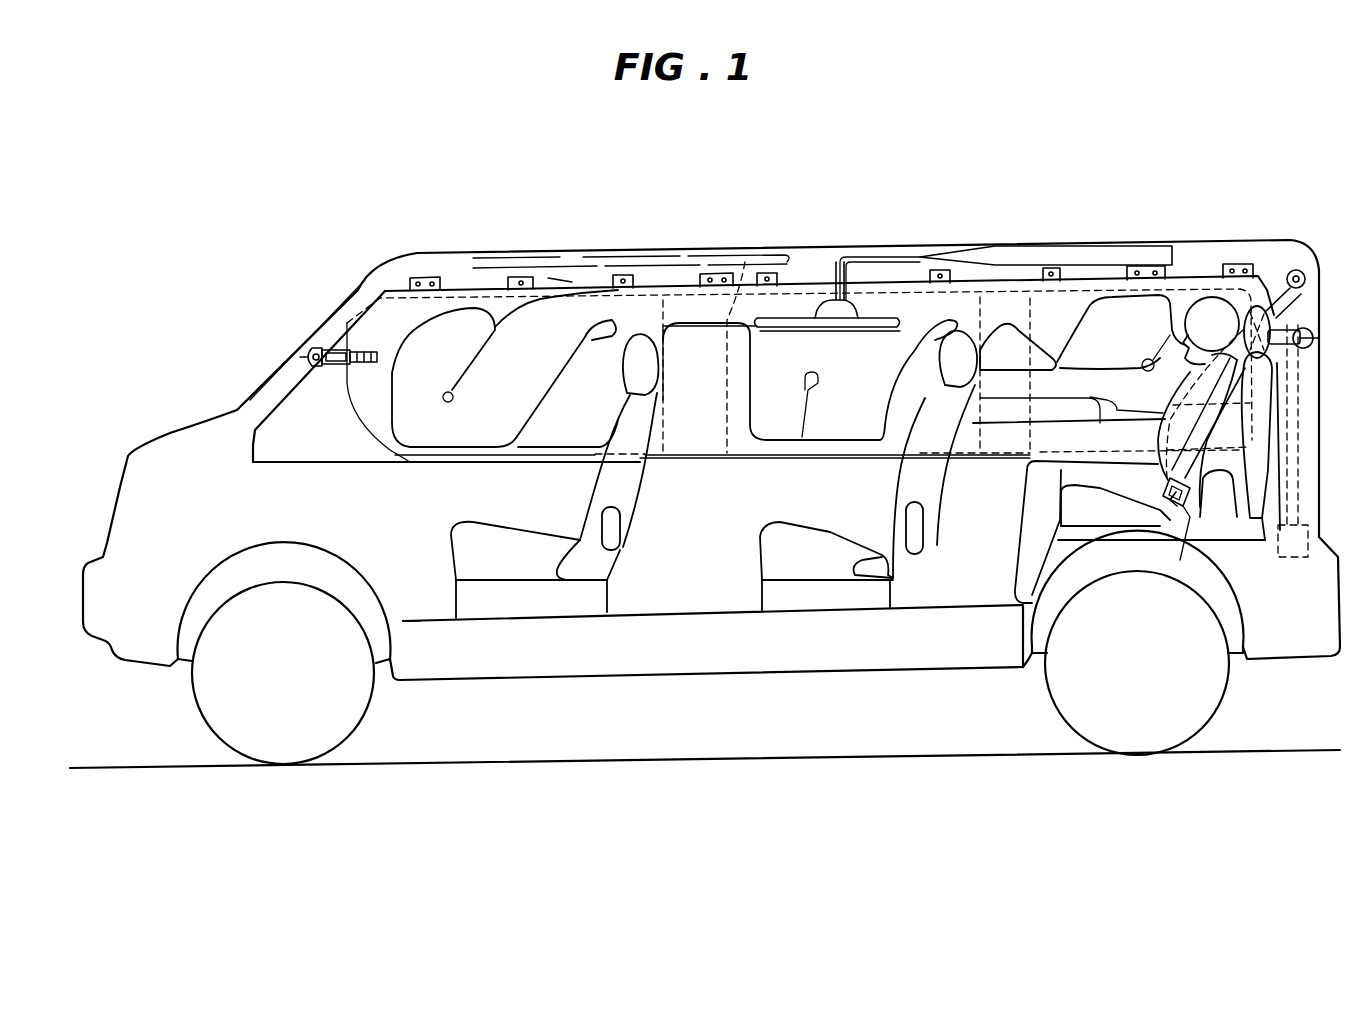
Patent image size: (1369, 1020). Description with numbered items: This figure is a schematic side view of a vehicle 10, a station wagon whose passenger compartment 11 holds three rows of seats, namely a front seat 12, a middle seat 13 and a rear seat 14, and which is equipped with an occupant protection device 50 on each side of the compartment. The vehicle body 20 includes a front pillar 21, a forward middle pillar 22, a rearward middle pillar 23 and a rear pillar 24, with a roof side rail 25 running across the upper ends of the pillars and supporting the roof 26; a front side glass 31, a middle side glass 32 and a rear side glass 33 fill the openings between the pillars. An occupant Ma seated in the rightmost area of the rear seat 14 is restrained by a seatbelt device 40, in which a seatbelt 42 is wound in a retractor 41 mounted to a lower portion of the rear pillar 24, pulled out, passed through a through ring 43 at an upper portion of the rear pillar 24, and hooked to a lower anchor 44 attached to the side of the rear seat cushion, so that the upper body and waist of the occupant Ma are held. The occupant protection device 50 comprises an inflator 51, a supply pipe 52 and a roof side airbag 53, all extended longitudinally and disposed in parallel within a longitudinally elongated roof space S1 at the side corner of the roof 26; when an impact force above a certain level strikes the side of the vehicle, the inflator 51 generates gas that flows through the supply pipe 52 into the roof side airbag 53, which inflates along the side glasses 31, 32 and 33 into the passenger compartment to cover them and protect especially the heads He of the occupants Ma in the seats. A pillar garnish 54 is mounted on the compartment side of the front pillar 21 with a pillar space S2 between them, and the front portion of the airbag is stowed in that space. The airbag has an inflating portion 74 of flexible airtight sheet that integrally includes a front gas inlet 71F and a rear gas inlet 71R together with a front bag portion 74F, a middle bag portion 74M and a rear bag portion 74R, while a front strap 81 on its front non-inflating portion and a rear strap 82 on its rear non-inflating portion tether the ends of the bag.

The vehicle 10 is at (190, 177).
The passenger compartment 11 is at (417, 553).
The front seat 12 is at (517, 567).
The middle seat 13 is at (810, 567).
The rear seat 14 is at (1096, 526).
The vehicle body 20 is at (771, 285).
The front pillar 21 is at (293, 363).
The forward middle pillar 22 is at (745, 262).
The rearward middle pillar 23 is at (978, 296).
The rear pillar 24 is at (1257, 360).
The roof side rail 25 is at (582, 257).
The roof 26 is at (650, 262).
The front side glass 31 is at (333, 445).
The middle side glass 32 is at (748, 438).
The rear side glass 33 is at (1043, 437).
The seatbelt device 40 is at (1296, 565).
The retractor 41 is at (1289, 485).
The seatbelt 42 is at (1213, 440).
The through ring 43 is at (1296, 270).
The lower anchor 44 is at (1185, 499).
The occupant protection device 50 is at (1006, 189).
The inflator 51 is at (1045, 232).
The supply pipe 52 is at (915, 270).
The roof side airbag 53 is at (495, 268).
The pillar garnish 54 is at (280, 407).
The front gas inlet 71F is at (830, 300).
The rear gas inlet 71R is at (848, 300).
The inflating portion 74 is at (777, 327).
The front bag portion 74F is at (413, 330).
The middle bag portion 74M is at (745, 362).
The rear bag portion 74R is at (1098, 283).
The front strap 81 is at (330, 343).
The rear strap 82 is at (1312, 328).
The roof space S1 is at (560, 280).
The pillar space S2 is at (252, 405).
The occupant Ma is at (1148, 358).
The head He is at (1212, 297).